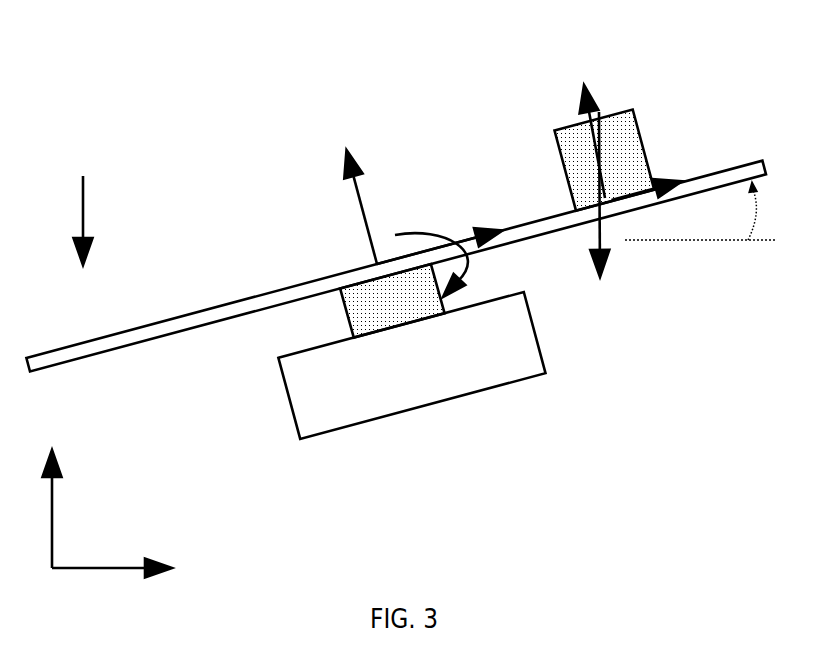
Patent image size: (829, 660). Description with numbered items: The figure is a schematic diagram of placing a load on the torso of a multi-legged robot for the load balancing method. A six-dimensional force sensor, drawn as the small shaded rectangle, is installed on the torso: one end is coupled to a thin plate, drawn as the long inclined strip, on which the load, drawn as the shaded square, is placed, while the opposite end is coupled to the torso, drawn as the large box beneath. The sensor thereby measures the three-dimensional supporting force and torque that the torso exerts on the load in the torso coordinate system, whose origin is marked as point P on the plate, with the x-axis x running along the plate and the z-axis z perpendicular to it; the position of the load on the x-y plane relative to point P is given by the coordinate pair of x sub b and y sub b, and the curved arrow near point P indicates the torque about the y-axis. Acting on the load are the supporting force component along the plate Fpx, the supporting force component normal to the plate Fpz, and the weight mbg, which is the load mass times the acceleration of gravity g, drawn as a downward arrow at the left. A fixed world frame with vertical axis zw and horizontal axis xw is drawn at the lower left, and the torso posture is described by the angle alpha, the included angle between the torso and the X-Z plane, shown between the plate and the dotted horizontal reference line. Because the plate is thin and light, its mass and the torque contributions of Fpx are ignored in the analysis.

The acceleration of gravity g is at (105, 220).
The z-axis of torso coordinate system z is at (349, 190).
The x-axis of torso coordinate system x is at (440, 228).
The origin of torso coordinate system P is at (349, 252).
The supporting force in z direction Fpz is at (577, 112).
The supporting force in x direction Fpx is at (669, 165).
The weight of load mbg is at (613, 220).
The included angle between torso and X-Z plane alpha is at (708, 211).
The world-frame z-axis zw is at (63, 489).
The world-frame x-axis xw is at (141, 572).